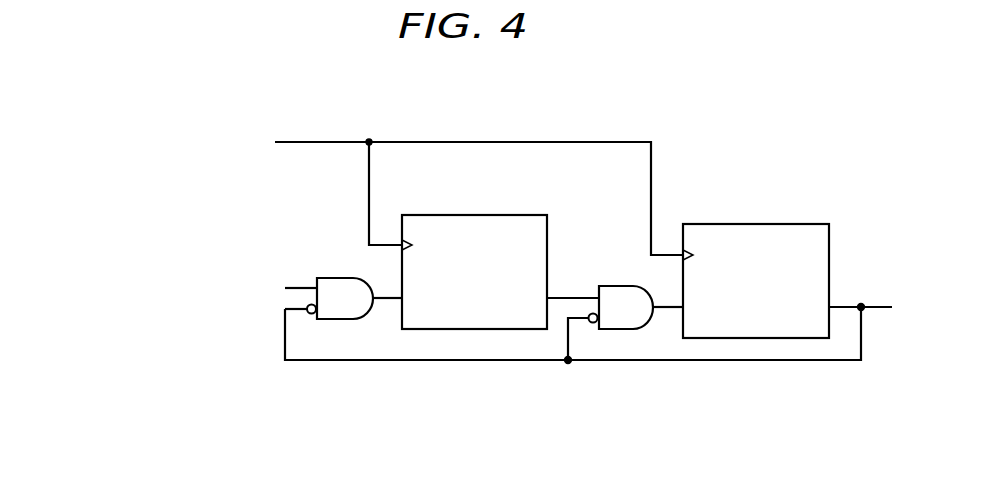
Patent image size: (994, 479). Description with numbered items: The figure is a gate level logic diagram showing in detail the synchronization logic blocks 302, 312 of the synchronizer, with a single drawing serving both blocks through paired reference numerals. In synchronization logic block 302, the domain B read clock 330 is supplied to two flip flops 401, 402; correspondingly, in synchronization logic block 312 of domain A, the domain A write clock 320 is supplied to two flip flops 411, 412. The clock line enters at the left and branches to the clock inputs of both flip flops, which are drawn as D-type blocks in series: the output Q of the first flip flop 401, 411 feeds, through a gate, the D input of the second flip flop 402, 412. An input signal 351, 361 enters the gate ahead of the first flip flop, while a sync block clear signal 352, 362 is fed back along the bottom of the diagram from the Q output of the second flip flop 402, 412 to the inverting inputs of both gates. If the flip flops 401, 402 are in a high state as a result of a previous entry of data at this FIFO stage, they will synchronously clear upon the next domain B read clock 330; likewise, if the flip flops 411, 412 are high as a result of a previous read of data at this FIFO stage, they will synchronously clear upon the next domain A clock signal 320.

The domain A write clock 320 is at (152, 169).
The domain B read clock 330 is at (360, 170).
The synchronization logic block 302 is at (572, 250).
The synchronization logic block 312 is at (504, 141).
The flip flop 401 is at (474, 272).
The flip flop 411 is at (518, 258).
The flip flop 402 is at (756, 281).
The flip flop 412 is at (803, 268).
The sync block input 351 is at (327, 273).
The sync block input 361 is at (302, 286).
The sync block clear 352 is at (562, 376).
The sync block clear 362 is at (360, 363).